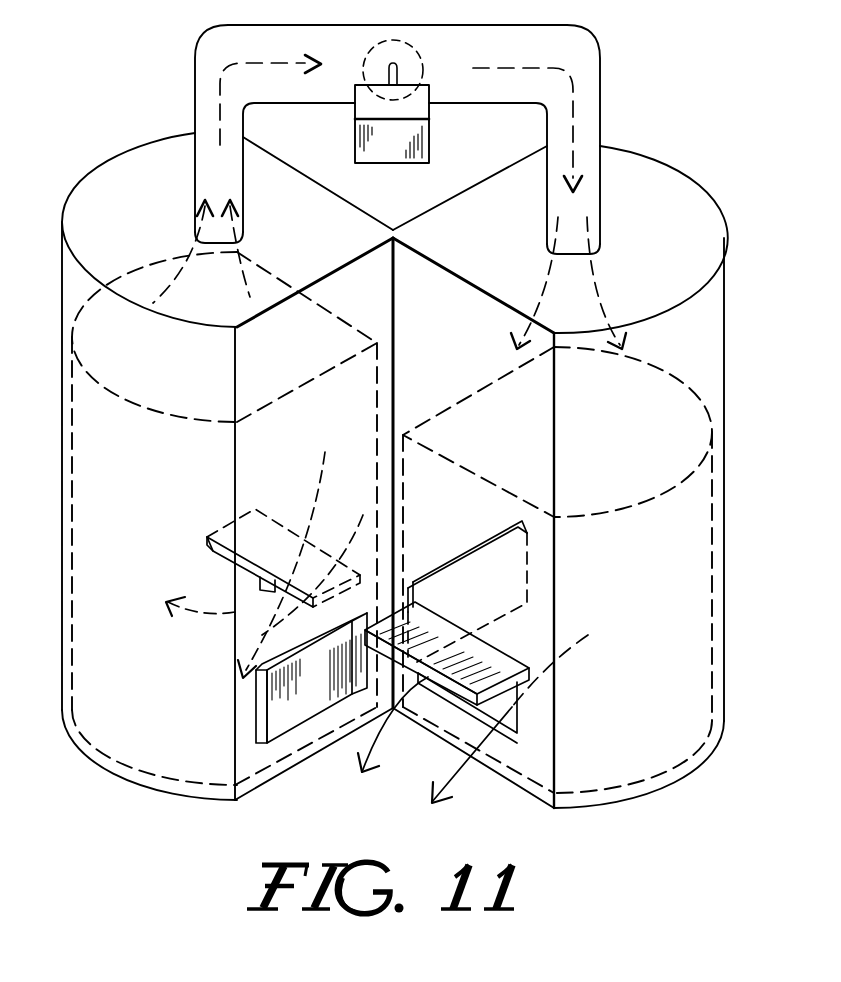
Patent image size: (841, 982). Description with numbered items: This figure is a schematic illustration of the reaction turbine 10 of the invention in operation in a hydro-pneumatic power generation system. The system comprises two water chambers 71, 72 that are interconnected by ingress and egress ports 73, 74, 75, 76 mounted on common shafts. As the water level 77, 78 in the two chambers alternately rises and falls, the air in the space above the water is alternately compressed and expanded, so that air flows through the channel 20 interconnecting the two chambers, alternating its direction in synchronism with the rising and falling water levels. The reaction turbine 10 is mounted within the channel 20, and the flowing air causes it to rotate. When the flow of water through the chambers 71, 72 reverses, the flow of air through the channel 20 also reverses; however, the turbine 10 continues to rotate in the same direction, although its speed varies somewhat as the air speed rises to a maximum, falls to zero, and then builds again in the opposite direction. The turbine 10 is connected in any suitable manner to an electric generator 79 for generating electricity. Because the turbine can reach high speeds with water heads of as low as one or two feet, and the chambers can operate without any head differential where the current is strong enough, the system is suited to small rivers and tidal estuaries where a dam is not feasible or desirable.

The reaction turbine 10 is at (415, 60).
The channel 20 is at (600, 101).
The water chamber 71 is at (113, 190).
The water chamber 72 is at (675, 192).
The ingress and egress port 73 is at (222, 532).
The ingress and egress port 74 is at (292, 701).
The ingress and egress port 75 is at (513, 562).
The ingress and egress port 76 is at (443, 635).
The water level 77 is at (95, 407).
The water level 78 is at (712, 432).
The electric generator 79 is at (415, 133).